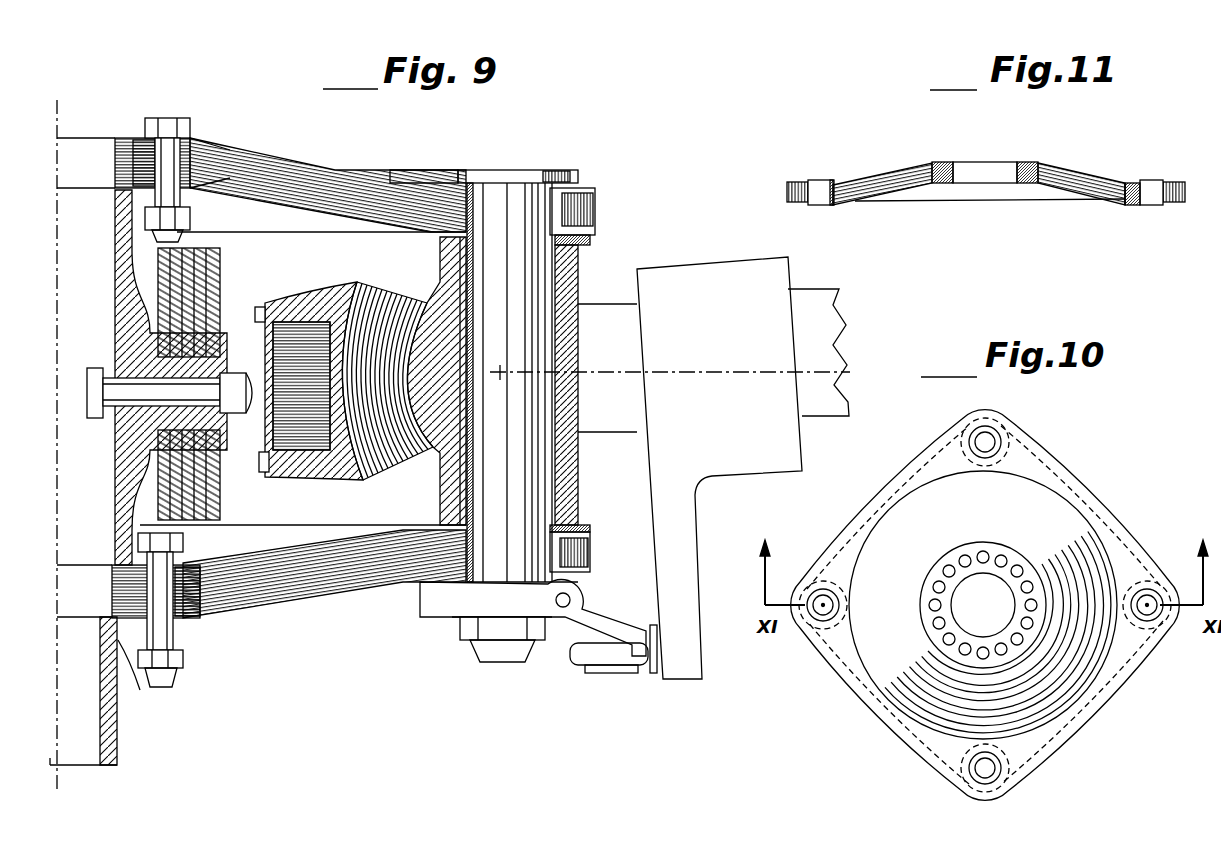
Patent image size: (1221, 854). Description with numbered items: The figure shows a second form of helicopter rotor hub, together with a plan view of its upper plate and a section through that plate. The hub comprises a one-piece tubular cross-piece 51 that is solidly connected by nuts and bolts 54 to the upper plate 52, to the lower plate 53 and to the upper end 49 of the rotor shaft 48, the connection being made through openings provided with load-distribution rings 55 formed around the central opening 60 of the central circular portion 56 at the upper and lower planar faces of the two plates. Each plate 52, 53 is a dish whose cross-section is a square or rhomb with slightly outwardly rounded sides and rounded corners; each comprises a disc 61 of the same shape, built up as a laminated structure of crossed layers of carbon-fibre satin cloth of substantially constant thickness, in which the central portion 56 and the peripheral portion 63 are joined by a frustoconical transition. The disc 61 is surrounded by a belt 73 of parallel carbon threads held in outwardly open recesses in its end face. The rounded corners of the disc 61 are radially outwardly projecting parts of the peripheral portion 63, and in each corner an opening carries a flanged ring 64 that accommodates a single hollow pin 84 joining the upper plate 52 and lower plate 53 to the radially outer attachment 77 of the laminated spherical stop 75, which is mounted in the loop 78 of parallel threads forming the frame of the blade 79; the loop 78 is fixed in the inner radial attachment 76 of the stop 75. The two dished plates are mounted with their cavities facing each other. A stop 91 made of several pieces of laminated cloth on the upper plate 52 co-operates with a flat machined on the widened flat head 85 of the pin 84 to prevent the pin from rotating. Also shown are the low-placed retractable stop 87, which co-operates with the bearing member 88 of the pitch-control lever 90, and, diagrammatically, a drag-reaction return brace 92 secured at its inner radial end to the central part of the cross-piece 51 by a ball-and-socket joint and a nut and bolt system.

In FIG. 9, the rotor shaft 48 is at (107, 742).
In FIG. 9, the upper end of the rotor shaft 49 is at (122, 660).
In FIG. 9, the one-piece tubular cross-piece 51 is at (115, 262).
In FIG. 9, the upper plate 52 is at (317, 153).
In FIG. 9, the lower plate 53 is at (325, 596).
In FIG. 9, the bolt 54 is at (170, 160).
In FIG. 9, the load-distribution rings 55 is at (187, 177).
In FIG. 9, the central circular portion 56 is at (150, 136).
In FIG. 11, the central circular portion 56 is at (940, 163).
In FIG. 10, the central circular portion 56 is at (1033, 625).
In FIG. 9, the central opening 60 is at (117, 160).
In FIG. 11, the central opening 60 is at (965, 176).
In FIG. 10, the central opening 60 is at (986, 605).
In FIG. 11, the disc 61 is at (1083, 172).
In FIG. 10, the disc 61 is at (1022, 530).
In FIG. 9, the peripheral portion 63 is at (440, 557).
In FIG. 11, the peripheral portion 63 is at (1125, 185).
In FIG. 10, the peripheral portion 63 is at (1087, 502).
In FIG. 9, the flanged ring 64 is at (477, 203).
In FIG. 11, the flanged ring 64 is at (835, 206).
In FIG. 10, the flanged ring 64 is at (822, 588).
In FIG. 9, the belt of parallel carbon threads 73 is at (590, 203).
In FIG. 11, the belt of parallel carbon threads 73 is at (787, 192).
In FIG. 10, the belt of parallel carbon threads 73 is at (1143, 676).
In FIG. 9, the laminated spherical stop 75 is at (410, 467).
In FIG. 9, the inner radial attachment 76 is at (327, 300).
In FIG. 9, the radially outer attachment 77 is at (433, 300).
In FIG. 9, the loop of parallel threads 78 is at (307, 417).
In FIG. 9, the blade 79 is at (810, 305).
In FIG. 9, the hollow pin 84 is at (507, 285).
In FIG. 9, the widened flat head 85 is at (530, 176).
In FIG. 9, the low-placed retractable stop 87 is at (610, 655).
In FIG. 9, the bearing member 88 is at (672, 662).
In FIG. 9, the pitch-control lever 90 is at (703, 272).
In FIG. 9, the stop 91 is at (440, 177).
In FIG. 9, the drag-reaction return brace 92 is at (225, 290).